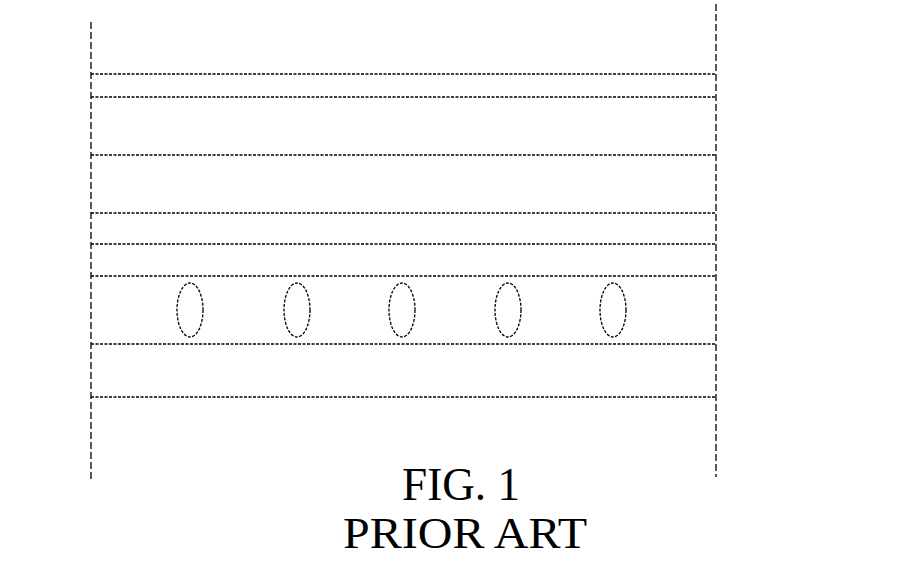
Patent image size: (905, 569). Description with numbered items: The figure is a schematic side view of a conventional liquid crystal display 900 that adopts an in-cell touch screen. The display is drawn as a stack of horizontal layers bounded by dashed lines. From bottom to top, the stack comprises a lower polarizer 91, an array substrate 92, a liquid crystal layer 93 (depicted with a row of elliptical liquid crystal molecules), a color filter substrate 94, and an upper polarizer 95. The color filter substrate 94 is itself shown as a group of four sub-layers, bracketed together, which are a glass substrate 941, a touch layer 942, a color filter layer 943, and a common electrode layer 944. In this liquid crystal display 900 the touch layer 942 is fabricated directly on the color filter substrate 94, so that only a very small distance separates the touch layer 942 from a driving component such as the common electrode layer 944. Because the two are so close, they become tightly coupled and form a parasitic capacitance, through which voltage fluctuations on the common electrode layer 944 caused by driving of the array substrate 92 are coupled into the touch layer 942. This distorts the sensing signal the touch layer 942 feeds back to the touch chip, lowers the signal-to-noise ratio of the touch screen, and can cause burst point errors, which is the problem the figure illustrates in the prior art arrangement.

The liquid crystal display 900 is at (212, 55).
The upper polarizer 95 is at (650, 97).
The color filter substrate 94 is at (805, 155).
The glass substrate 941 is at (650, 155).
The touch layer 942 is at (650, 213).
The color filter layer 943 is at (650, 244).
The common electrode layer 944 is at (650, 276).
The liquid crystal layer 93 is at (650, 344).
The array substrate 92 is at (650, 397).
The lower polarizer 91 is at (650, 423).